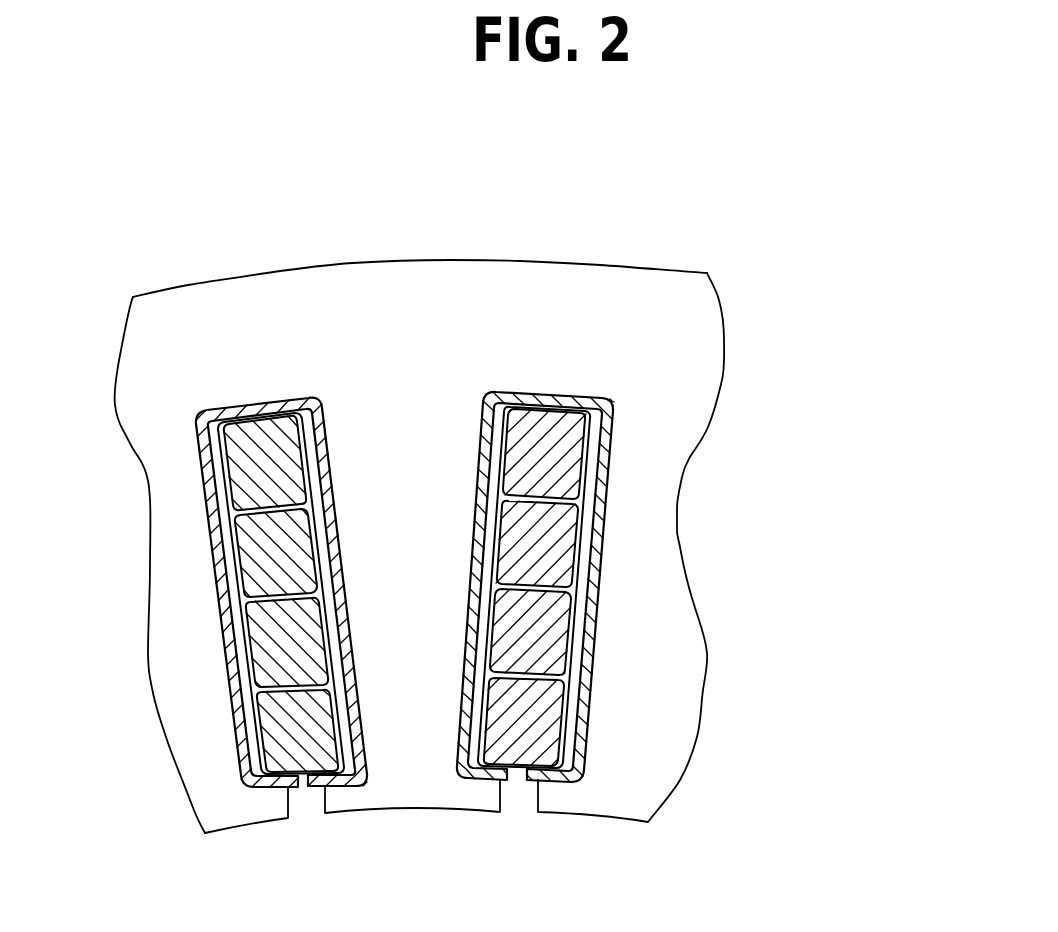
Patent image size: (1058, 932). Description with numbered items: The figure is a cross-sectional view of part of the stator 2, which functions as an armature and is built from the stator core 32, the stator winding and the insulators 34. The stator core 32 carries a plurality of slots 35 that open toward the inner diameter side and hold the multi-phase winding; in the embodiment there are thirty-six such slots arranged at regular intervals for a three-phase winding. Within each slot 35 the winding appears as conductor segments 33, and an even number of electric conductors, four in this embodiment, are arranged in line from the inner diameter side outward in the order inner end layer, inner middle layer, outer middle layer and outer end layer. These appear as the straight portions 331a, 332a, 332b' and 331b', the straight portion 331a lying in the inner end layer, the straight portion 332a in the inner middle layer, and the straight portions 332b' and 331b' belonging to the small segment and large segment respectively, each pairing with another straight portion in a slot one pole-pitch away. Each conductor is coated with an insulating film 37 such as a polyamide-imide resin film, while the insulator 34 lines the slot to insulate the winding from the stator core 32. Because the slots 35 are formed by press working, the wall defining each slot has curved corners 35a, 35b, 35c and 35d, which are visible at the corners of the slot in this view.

The stator 2 is at (690, 204).
The stator core 32 is at (442, 297).
The conductor segments 33 is at (853, 435).
The straight portion of electric conductor in inner end layer 331a is at (543, 737).
The straight portion of large segment 331b' is at (674, 454).
The straight portion of electric conductor in inner middle layer 332a is at (548, 643).
The straight portion of small segment 332b' is at (670, 544).
The insulator 34 is at (600, 397).
The slot 35 is at (517, 780).
The curved corner 35a is at (245, 788).
The curved corner 35b is at (375, 786).
The curved corner 35c is at (197, 412).
The curved corner 35d is at (313, 400).
The insulating film 37 is at (224, 476).